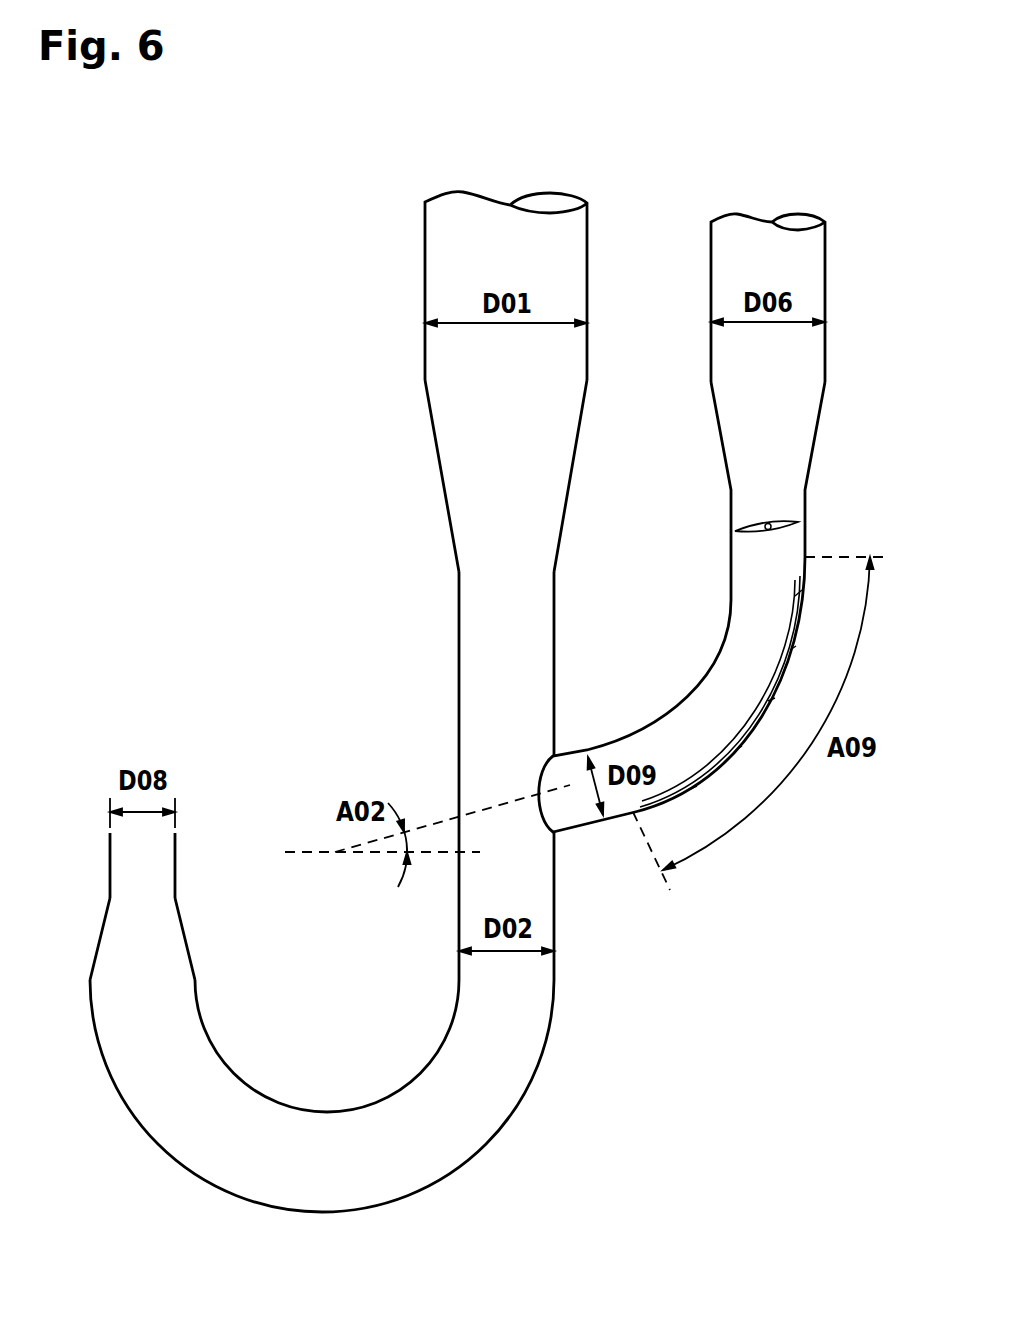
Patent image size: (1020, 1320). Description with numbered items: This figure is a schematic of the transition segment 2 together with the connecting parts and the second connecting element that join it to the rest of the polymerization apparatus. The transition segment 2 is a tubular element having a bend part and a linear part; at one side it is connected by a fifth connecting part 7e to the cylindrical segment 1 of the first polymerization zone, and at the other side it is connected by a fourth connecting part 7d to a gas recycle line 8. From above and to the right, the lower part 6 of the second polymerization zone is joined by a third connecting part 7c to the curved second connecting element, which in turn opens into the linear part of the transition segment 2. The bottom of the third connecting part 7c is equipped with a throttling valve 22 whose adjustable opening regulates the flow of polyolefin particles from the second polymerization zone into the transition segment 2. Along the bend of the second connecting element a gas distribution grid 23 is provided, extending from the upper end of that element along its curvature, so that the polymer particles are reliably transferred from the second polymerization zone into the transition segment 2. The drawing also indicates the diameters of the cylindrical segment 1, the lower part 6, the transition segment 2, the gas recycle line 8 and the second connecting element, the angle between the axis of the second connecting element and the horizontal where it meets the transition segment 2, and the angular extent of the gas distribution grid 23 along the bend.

The cylindrical segment 1 is at (425, 268).
The transition segment 2 is at (532, 1080).
The lower part of second polymerization zone 6 is at (825, 287).
The third connecting part 7c is at (825, 422).
The fourth connecting part 7d is at (101, 937).
The fifth connecting part 7e is at (442, 480).
The gas recycle line 8 is at (110, 866).
The throttling valve 22 is at (782, 519).
The gas distribution grid 23 is at (777, 672).